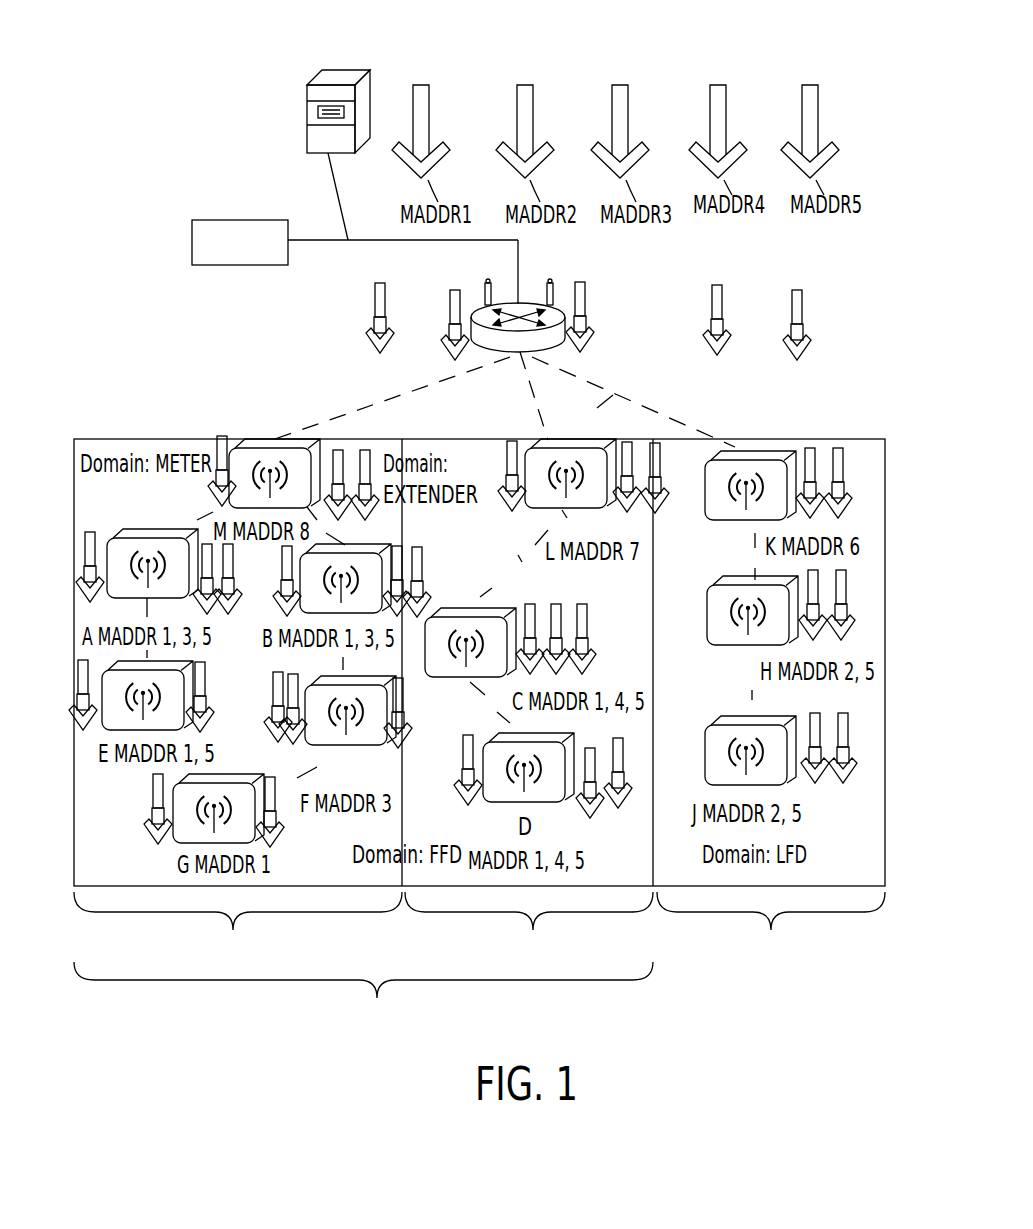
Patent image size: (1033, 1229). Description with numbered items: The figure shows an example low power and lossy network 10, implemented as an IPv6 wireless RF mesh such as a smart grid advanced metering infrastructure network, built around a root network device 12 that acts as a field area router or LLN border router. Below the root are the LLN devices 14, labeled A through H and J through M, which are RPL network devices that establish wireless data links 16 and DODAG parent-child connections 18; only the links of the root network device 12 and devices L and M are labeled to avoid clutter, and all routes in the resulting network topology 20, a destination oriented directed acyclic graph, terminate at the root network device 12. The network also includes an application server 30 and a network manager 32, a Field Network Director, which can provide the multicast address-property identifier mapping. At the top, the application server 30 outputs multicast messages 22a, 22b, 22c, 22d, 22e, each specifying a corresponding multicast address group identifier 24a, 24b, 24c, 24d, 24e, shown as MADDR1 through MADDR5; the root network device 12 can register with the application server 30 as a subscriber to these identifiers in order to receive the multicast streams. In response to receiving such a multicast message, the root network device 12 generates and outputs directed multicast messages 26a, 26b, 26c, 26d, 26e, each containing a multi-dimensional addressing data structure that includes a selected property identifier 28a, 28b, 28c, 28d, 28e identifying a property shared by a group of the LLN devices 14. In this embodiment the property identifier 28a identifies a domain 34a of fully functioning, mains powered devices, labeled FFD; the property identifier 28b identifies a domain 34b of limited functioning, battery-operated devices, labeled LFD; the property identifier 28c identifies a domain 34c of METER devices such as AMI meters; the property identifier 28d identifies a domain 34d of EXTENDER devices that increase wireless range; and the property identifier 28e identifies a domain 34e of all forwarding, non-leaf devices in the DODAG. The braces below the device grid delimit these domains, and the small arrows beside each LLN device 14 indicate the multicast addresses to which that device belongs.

The low power and lossy network 10 is at (258, 78).
The root network device 12 is at (515, 305).
The LLN device 14 is at (143, 555).
The wireless data link 16 is at (440, 408).
The DODAG parent-child connection 18 is at (632, 391).
The network topology 20 is at (205, 395).
The multicast message 22a is at (410, 168).
The multicast message 22b is at (512, 168).
The multicast message 22c is at (608, 166).
The multicast message 22d is at (705, 164).
The multicast message 22e is at (828, 160).
The multicast address group identifier 24a is at (427, 112).
The multicast address group identifier 24b is at (531, 110).
The multicast address group identifier 24c is at (626, 108).
The multicast address group identifier 24d is at (724, 106).
The multicast address group identifier 24e is at (816, 104).
The directed multicast message 26a is at (375, 345).
The directed multicast message 26b is at (590, 343).
The directed multicast message 26c is at (450, 350).
The directed multicast message 26d is at (720, 352).
The directed multicast message 26e is at (795, 352).
The property identifier 28a is at (379, 328).
The property identifier 28b is at (588, 322).
The property identifier 28c is at (453, 333).
The property identifier 28d is at (710, 320).
The property identifier 28e is at (792, 326).
The application server 30 is at (312, 133).
The network manager 32 is at (238, 270).
The domain of fully functioning devices 34a is at (363, 1000).
The domain of limited functioning devices 34b is at (771, 930).
The domain of METER devices 34c is at (238, 930).
The domain of EXTENDER devices 34d is at (529, 930).
The domain of forwarding devices 34e is at (880, 930).